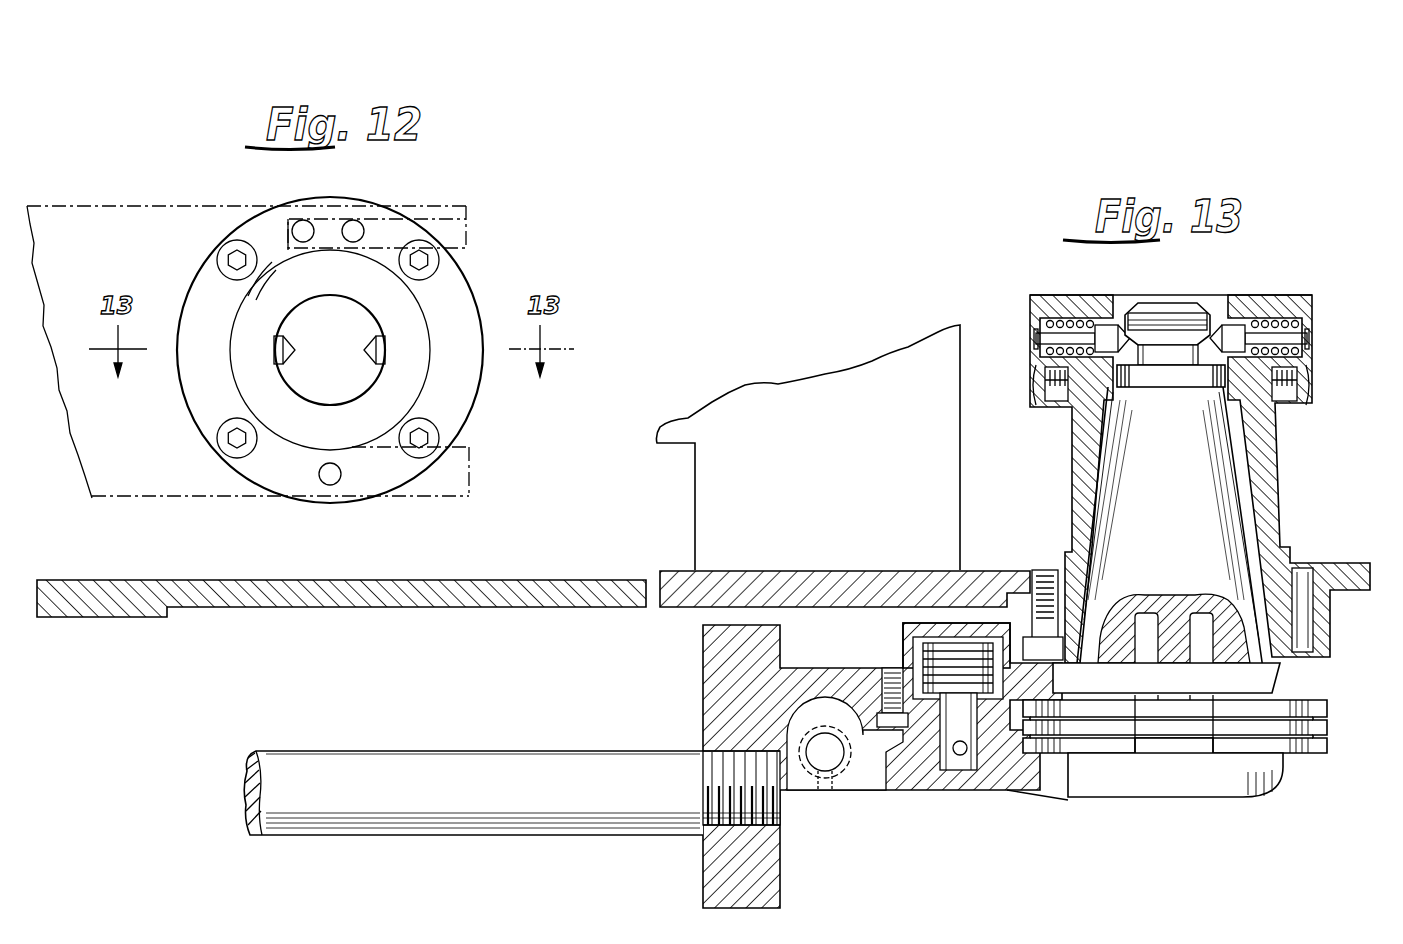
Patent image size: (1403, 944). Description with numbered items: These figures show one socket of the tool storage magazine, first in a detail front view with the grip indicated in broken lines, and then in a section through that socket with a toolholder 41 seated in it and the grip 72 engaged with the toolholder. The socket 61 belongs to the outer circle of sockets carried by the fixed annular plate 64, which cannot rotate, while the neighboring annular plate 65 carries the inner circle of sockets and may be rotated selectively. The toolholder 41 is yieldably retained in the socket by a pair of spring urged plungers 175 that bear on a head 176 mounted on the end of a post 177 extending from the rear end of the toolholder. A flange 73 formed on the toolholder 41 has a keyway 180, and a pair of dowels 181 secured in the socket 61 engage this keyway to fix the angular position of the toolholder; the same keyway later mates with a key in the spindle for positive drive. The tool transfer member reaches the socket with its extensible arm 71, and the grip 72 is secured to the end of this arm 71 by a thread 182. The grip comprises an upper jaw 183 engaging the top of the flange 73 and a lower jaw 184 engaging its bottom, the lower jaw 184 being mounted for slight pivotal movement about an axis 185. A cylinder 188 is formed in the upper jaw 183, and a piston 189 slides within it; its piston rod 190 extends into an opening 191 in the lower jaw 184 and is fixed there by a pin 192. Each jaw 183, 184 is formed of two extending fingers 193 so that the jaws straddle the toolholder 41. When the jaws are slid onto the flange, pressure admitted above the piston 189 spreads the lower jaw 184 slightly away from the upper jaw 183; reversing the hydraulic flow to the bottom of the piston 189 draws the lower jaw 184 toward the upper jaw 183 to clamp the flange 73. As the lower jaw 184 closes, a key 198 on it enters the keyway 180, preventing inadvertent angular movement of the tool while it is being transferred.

In FIG. 13, the toolholder 41 is at (1213, 467).
In FIG. 13, the socket 61 is at (1262, 444).
In FIG. 13, the annular plate 64 is at (678, 597).
In FIG. 13, the annular plate 65 is at (478, 592).
In FIG. 13, the extensible arm 71 is at (357, 782).
In FIG. 12, the grip 72 is at (461, 186).
In FIG. 13, the grip 72 is at (1062, 815).
In FIG. 13, the flange 73 is at (1290, 753).
In FIG. 12, the spring urged plungers 175 is at (363, 356).
In FIG. 13, the spring urged plungers 175 is at (1112, 336).
In FIG. 13, the head 176 is at (1167, 326).
In FIG. 13, the post 177 is at (1170, 358).
In FIG. 12, the keyway 180 is at (300, 262).
In FIG. 13, the keyway 180 is at (1148, 733).
In FIG. 12, the dowels 181 is at (306, 220).
In FIG. 13, the dowels 181 is at (1203, 626).
In FIG. 13, the thread 182 is at (724, 778).
In FIG. 13, the upper jaw 183 is at (1252, 679).
In FIG. 13, the lower jaw 184 is at (1222, 770).
In FIG. 13, the axis 185 is at (818, 760).
In FIG. 13, the cylinder 188 is at (925, 651).
In FIG. 13, the piston 189 is at (952, 652).
In FIG. 13, the piston rod 190 is at (985, 752).
In FIG. 13, the opening 191 is at (923, 762).
In FIG. 13, the pin 192 is at (958, 746).
In FIG. 12, the fingers 193 is at (461, 233).
In FIG. 13, the key 198 is at (1184, 750).